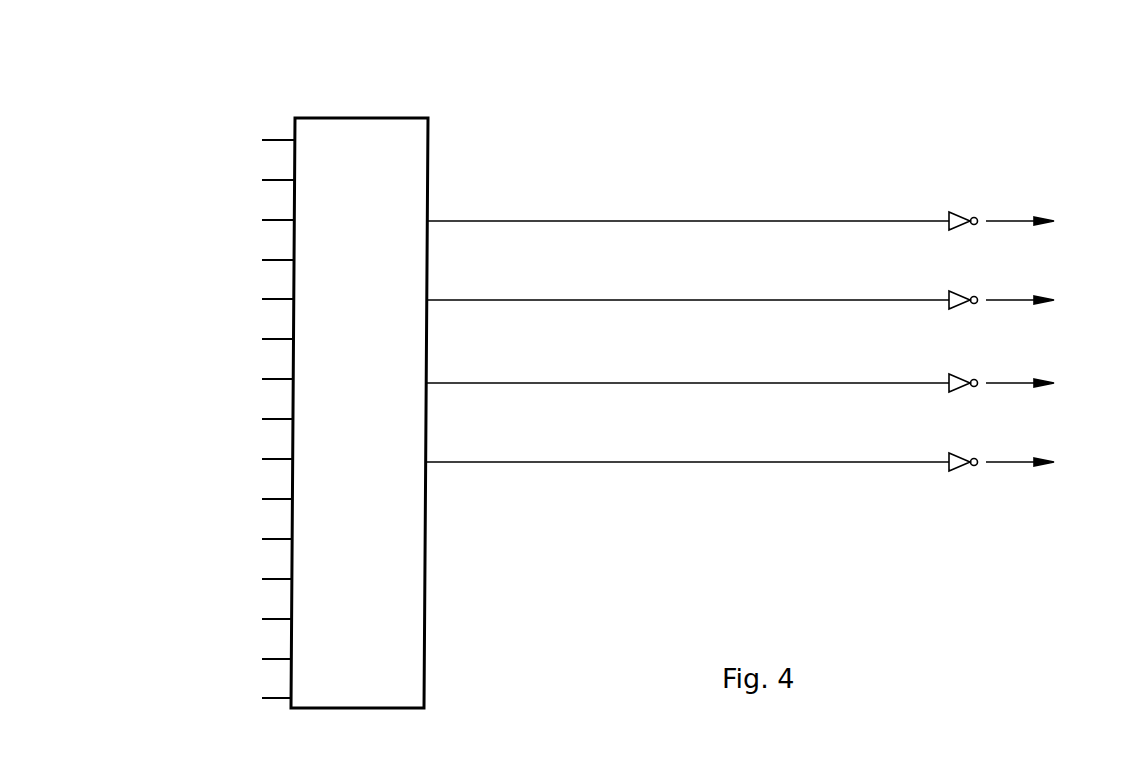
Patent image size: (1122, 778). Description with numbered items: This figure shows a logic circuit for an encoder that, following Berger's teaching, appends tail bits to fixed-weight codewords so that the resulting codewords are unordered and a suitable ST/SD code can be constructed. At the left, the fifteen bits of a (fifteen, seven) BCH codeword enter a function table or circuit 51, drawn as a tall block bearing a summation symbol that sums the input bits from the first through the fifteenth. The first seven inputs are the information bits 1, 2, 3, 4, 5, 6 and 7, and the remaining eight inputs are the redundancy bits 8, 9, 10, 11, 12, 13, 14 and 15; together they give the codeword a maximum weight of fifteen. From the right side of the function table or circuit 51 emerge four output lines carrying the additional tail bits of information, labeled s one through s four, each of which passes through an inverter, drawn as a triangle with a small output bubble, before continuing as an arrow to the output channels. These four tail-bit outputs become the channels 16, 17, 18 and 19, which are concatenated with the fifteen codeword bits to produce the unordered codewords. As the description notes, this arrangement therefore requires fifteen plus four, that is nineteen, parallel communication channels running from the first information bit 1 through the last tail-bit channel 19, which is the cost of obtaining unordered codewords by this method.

The function table or circuit 51 is at (375, 113).
The information bit a1 1 is at (254, 138).
The information bit a2 2 is at (254, 178).
The information bit a3 3 is at (254, 218).
The information bit a4 4 is at (254, 258).
The information bit a5 5 is at (253, 297).
The information bit a6 6 is at (253, 337).
The information bit a7 7 is at (253, 377).
The redundancy bit a8 8 is at (253, 417).
The redundancy bit a9 9 is at (253, 457).
The redundancy bit a10 10 is at (253, 497).
The redundancy bit a11 11 is at (252, 537).
The redundancy bit a12 12 is at (252, 577).
The redundancy bit a13 13 is at (252, 617).
The redundancy bit a14 14 is at (252, 657).
The redundancy bit a15 15 is at (252, 696).
The tail bit channel a16 16 is at (772, 201).
The tail bit channel a17 17 is at (772, 280).
The tail bit channel a18 18 is at (772, 362).
The tail bit channel a19 19 is at (772, 441).